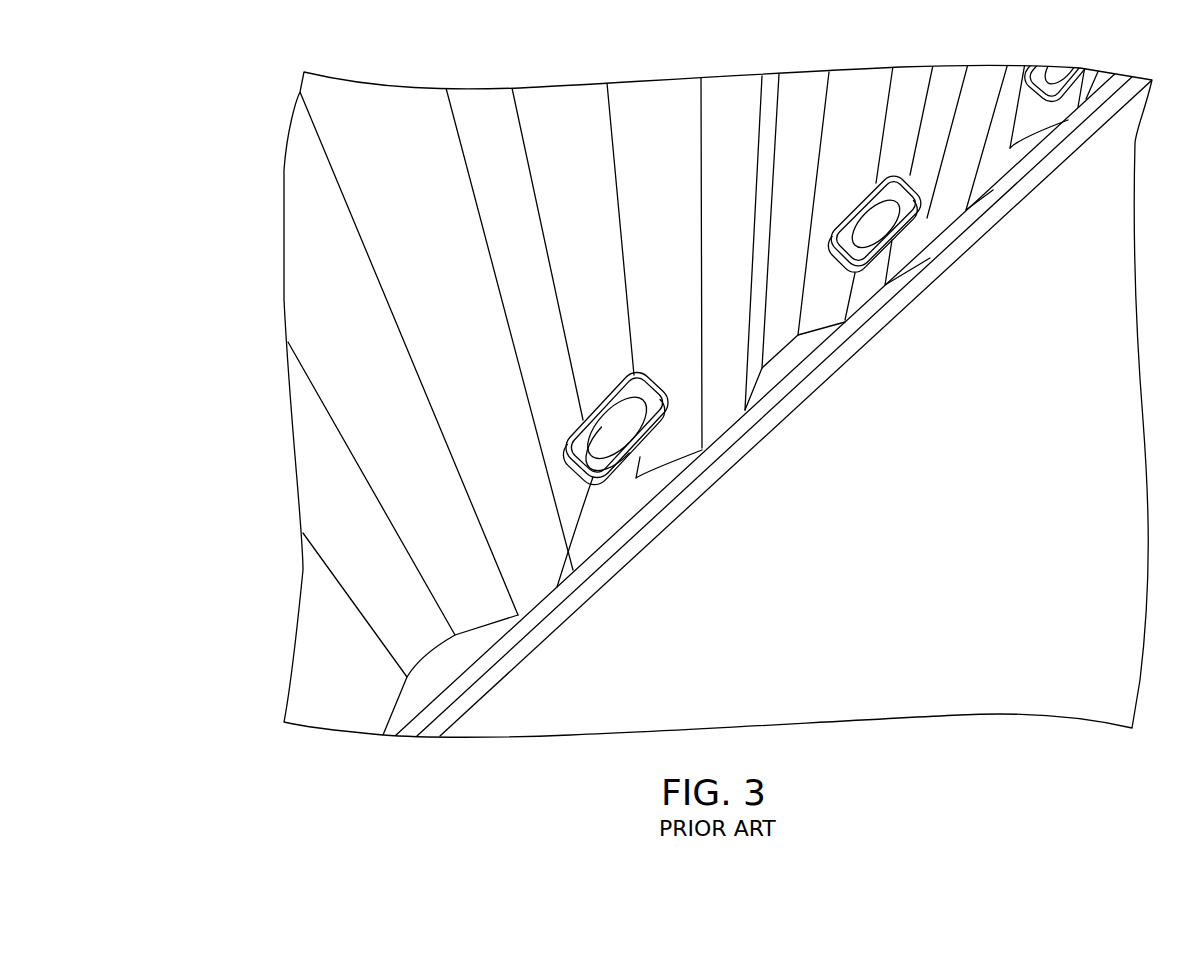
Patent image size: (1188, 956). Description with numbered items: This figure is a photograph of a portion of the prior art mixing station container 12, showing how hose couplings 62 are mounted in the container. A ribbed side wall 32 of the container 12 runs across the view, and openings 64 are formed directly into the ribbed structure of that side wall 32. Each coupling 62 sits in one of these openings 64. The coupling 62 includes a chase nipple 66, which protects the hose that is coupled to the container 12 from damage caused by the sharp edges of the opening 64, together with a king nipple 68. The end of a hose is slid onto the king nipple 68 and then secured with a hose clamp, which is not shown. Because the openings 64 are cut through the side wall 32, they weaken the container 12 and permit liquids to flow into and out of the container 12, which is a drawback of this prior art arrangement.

The container 12 is at (226, 116).
The side wall 32 is at (305, 298).
The coupling 62 is at (675, 454).
The opening 64 is at (637, 373).
The chase nipple 66 is at (585, 427).
The king nipple 68 is at (612, 455).